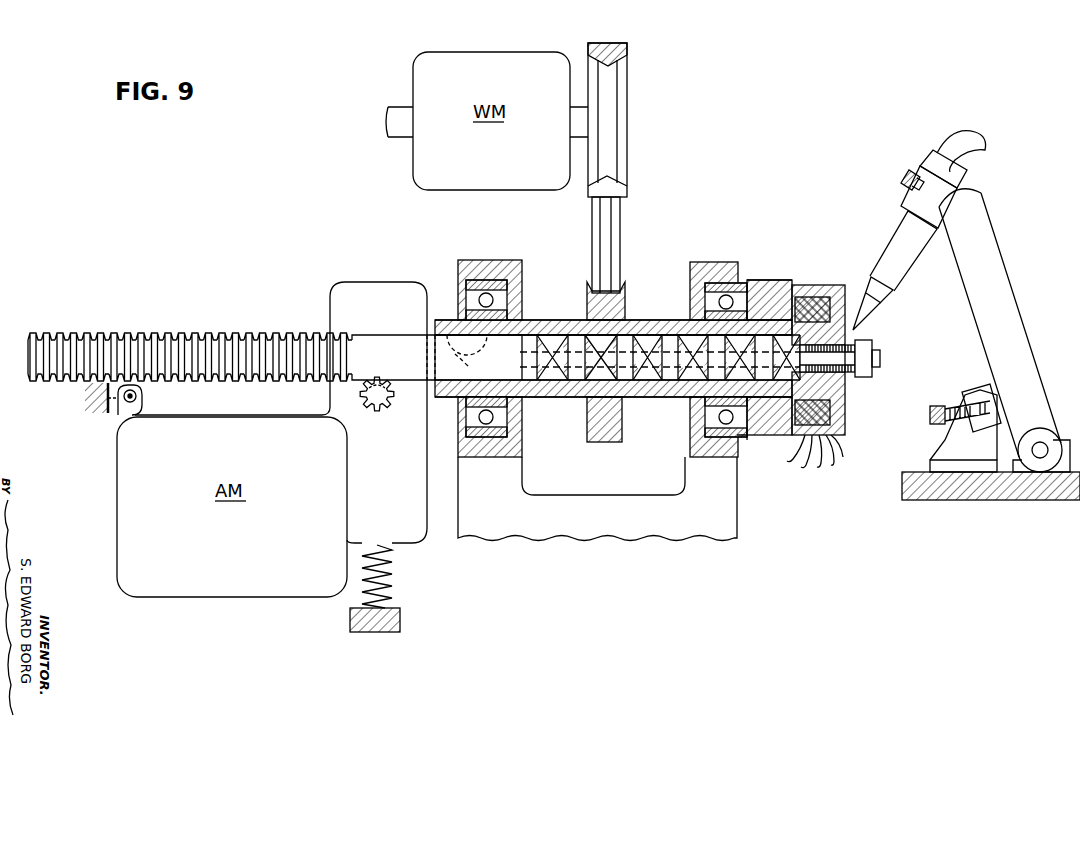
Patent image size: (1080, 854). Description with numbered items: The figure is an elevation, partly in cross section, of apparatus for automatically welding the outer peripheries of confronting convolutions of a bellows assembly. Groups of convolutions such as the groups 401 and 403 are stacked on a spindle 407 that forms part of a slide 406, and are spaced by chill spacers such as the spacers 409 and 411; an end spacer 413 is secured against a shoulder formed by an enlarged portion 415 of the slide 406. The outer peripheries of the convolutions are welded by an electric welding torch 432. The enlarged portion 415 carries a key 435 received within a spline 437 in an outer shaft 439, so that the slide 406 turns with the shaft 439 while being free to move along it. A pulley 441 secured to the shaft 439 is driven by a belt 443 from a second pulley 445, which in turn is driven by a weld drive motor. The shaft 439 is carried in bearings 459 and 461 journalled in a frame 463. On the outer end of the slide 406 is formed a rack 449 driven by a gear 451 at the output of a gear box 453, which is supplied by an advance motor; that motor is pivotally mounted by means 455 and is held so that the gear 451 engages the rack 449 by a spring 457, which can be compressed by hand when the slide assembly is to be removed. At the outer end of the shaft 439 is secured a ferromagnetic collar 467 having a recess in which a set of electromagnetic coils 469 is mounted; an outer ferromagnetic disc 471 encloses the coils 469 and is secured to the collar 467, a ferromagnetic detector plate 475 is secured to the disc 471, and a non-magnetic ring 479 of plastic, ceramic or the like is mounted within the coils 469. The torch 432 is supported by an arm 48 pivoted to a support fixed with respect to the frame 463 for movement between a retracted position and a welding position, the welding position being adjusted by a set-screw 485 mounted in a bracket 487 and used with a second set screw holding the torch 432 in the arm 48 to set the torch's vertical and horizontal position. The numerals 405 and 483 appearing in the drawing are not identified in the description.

The arm 48 is at (996, 279).
The group of convolutions 401 is at (853, 382).
The group of convolutions 403 is at (783, 378).
The housing block 405 is at (763, 345).
The slide 406 is at (419, 331).
The spindle 407 is at (880, 356).
The chill spacer 409 is at (812, 292).
The chill spacer 411 is at (776, 282).
The end spacer 413 is at (528, 338).
The enlarged portion 415 is at (519, 373).
The electric welding torch 432 is at (900, 230).
The key 435 is at (463, 358).
The spline 437 is at (627, 333).
The outer shaft 439 is at (679, 300).
The pulley 441 is at (625, 298).
The belt 443 is at (619, 216).
The second pulley 445 is at (620, 98).
The rack 449 is at (177, 333).
The gear 451 is at (363, 408).
The gear box 453 is at (358, 282).
The pivotal mounting means 455 is at (148, 398).
The spring 457 is at (393, 579).
The bearing 459 is at (481, 277).
The bearing 461 is at (715, 277).
The frame 463 is at (631, 525).
The ferromagnetic collar 467 is at (788, 284).
The electromagnetic coils 469 is at (826, 450).
The outer ferromagnetic disc 471 is at (837, 440).
The ferromagnetic detector plate 475 is at (846, 420).
The non-magnetic ring 479 is at (846, 396).
The pivot bracket 483 is at (1070, 378).
The set-screw 485 is at (987, 388).
The bracket 487 is at (980, 430).